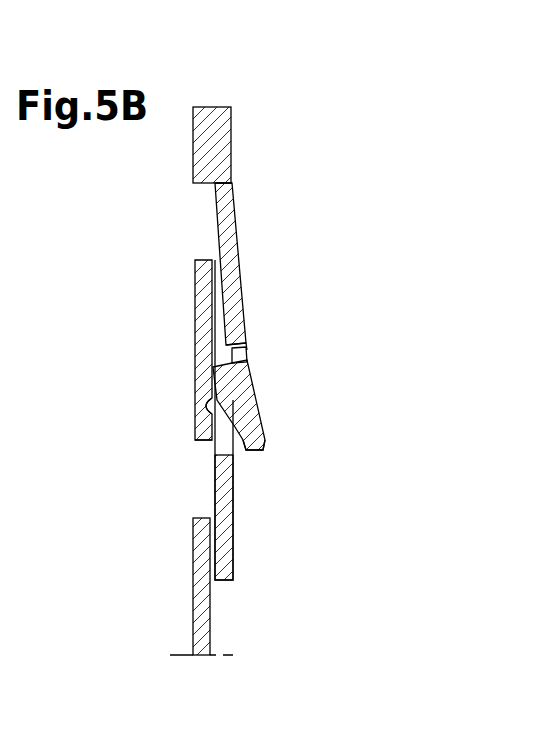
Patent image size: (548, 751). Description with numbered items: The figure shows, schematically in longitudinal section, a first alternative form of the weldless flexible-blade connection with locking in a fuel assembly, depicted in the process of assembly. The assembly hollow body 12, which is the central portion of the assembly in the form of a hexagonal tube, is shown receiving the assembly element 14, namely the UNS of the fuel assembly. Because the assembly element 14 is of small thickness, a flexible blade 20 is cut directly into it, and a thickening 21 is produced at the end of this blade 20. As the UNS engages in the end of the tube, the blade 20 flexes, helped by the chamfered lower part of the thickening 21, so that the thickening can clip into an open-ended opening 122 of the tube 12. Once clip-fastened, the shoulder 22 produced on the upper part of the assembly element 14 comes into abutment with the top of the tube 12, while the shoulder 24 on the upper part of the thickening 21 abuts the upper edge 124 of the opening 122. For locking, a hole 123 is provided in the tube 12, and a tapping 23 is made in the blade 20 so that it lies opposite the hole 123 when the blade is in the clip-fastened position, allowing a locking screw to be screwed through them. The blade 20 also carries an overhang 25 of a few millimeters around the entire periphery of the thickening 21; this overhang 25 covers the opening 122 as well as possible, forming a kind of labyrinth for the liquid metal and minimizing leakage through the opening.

The assembly hollow body 12 is at (194, 326).
The assembly element 14 is at (226, 146).
The flexible blade 20 is at (234, 247).
The thickening 21 is at (259, 408).
The shoulder 22 is at (204, 186).
The tapping 23 is at (250, 346).
The shoulder 24 is at (248, 356).
The overhang 25 is at (255, 448).
The open-ended opening 122 is at (212, 497).
The hole 123 is at (198, 412).
The upper edge 124 is at (203, 447).